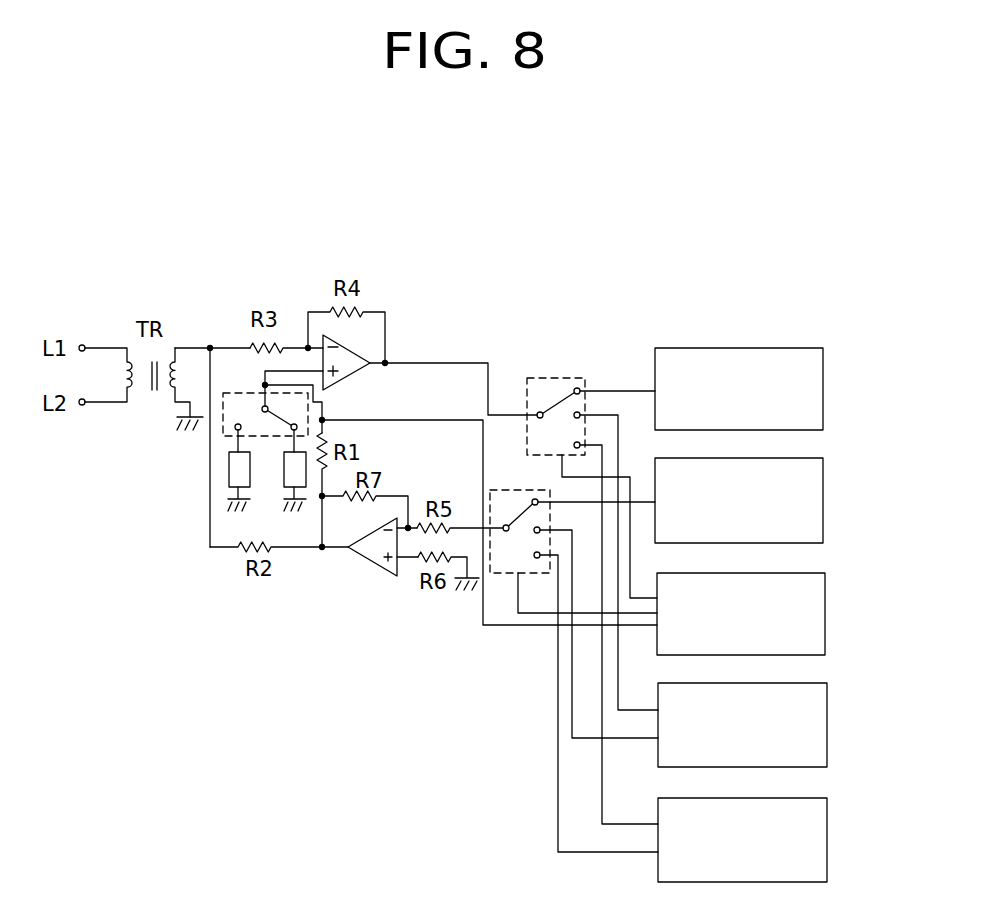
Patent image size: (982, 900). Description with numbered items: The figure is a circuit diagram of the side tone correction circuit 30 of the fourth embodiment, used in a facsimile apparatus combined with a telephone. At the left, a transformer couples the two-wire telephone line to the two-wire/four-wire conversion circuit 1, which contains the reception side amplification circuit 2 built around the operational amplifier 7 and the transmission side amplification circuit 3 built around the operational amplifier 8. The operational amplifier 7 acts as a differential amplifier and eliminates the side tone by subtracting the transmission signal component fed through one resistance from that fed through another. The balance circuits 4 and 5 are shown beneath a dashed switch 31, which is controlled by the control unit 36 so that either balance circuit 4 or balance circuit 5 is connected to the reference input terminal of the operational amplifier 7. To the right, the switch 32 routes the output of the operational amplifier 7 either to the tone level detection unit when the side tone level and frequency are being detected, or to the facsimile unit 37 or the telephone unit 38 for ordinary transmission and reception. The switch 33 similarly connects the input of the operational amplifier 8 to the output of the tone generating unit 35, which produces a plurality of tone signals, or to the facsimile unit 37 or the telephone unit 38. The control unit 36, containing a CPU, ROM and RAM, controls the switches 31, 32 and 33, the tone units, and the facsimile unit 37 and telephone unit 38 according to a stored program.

The two-wire/four-wire conversion circuit 1 is at (448, 243).
The reception side amplification circuit 2 is at (407, 351).
The transmission side amplification circuit 3 is at (393, 587).
The balance circuit 4 is at (262, 479).
The balance circuit 5 is at (285, 479).
The operational amplifier 7 is at (350, 366).
The operational amplifier 8 is at (370, 552).
The side tone correction circuit 30 is at (573, 542).
The switch 31 is at (257, 393).
The switch 32 is at (551, 378).
The switch 33 is at (524, 489).
The tone generating unit 35 is at (823, 392).
The control unit 36 is at (825, 617).
The facsimile unit 37 is at (827, 730).
The telephone unit 38 is at (827, 840).